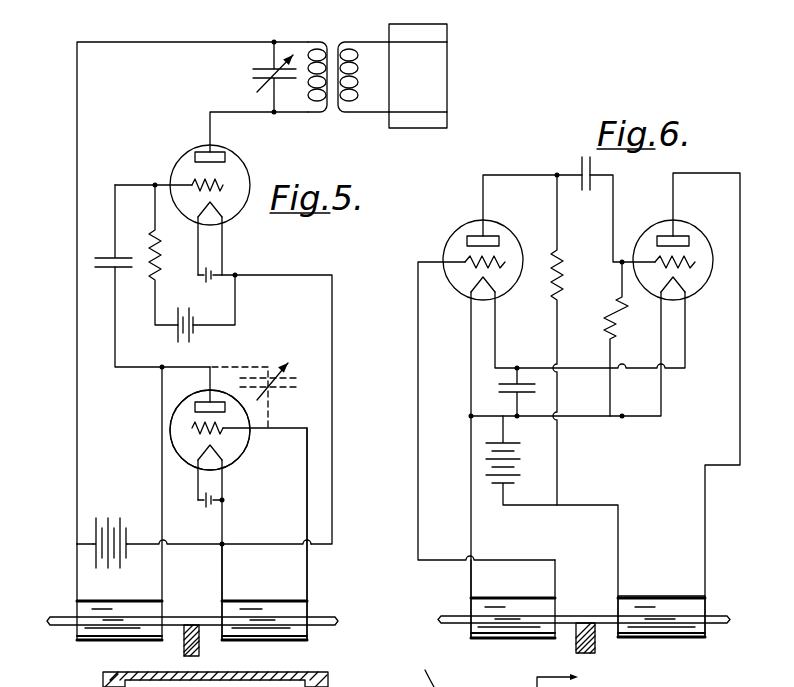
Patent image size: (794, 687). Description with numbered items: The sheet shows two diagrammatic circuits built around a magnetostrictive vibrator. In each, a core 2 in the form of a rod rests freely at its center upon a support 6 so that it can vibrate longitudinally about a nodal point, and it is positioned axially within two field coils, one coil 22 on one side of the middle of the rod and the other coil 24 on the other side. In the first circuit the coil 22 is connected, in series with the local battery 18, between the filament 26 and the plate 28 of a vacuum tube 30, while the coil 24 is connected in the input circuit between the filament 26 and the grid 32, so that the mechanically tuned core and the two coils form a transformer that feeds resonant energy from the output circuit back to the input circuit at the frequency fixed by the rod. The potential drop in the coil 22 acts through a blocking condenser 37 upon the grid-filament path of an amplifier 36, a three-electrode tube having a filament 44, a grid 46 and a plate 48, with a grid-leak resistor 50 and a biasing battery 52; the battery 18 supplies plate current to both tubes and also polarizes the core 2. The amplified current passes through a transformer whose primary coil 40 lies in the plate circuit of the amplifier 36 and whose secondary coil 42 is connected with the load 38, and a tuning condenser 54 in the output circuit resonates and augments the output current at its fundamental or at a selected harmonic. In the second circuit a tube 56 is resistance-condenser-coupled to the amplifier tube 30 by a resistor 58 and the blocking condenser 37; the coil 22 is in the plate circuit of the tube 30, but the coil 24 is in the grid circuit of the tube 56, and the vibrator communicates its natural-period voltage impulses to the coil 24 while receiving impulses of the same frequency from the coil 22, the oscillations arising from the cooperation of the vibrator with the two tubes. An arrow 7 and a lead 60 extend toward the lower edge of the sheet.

In FIG. 5, the core 2 is at (62, 617).
In FIG. 6, the core 2 is at (458, 616).
In FIG. 5, the support 6 is at (193, 625).
In FIG. 6, the support 6 is at (588, 623).
In FIG. 6, the direction arrow 7 is at (571, 676).
In FIG. 5, the local battery 18 is at (125, 505).
In FIG. 6, the local battery 18 is at (511, 478).
In FIG. 5, the coil 22 is at (90, 637).
In FIG. 6, the coil 22 is at (656, 628).
In FIG. 5, the coil 24 is at (285, 631).
In FIG. 6, the coil 24 is at (527, 627).
In FIG. 5, the filament 26 is at (222, 450).
In FIG. 6, the filament 26 is at (688, 290).
In FIG. 5, the plate 28 is at (208, 400).
In FIG. 6, the plate 28 is at (676, 238).
In FIG. 5, the vacuum tube 30 is at (171, 438).
In FIG. 6, the vacuum tube 30 is at (707, 278).
In FIG. 5, the grid 32 is at (227, 432).
In FIG. 6, the grid 32 is at (692, 262).
In FIG. 5, the amplifier 36 is at (226, 218).
In FIG. 5, the blocking condenser 37 is at (95, 262).
In FIG. 6, the blocking condenser 37 is at (580, 163).
In FIG. 5, the load 38 is at (423, 107).
In FIG. 5, the primary coil 40 is at (318, 114).
In FIG. 5, the secondary coil 42 is at (338, 114).
In FIG. 5, the filament 44 is at (224, 208).
In FIG. 5, the grid 46 is at (198, 185).
In FIG. 5, the plate 48 is at (200, 150).
In FIG. 5, the grid-leak resistor 50 is at (155, 283).
In FIG. 5, the biasing battery 52 is at (194, 332).
In FIG. 5, the tuning condenser 54 is at (272, 66).
In FIG. 6, the tube 56 is at (465, 238).
In FIG. 6, the resistor 58 is at (558, 250).
In FIG. 6, the conductor 60 is at (413, 667).